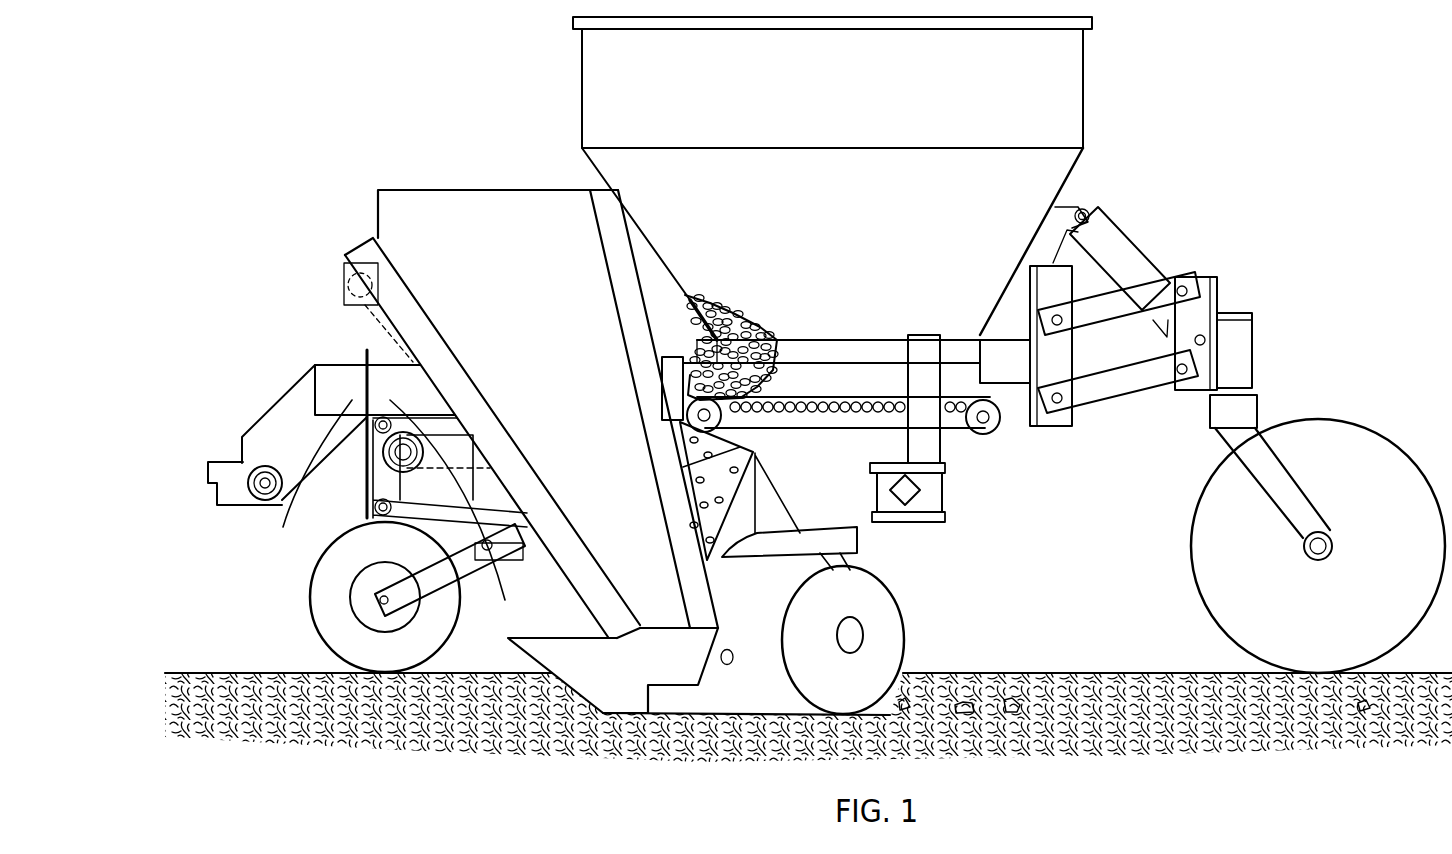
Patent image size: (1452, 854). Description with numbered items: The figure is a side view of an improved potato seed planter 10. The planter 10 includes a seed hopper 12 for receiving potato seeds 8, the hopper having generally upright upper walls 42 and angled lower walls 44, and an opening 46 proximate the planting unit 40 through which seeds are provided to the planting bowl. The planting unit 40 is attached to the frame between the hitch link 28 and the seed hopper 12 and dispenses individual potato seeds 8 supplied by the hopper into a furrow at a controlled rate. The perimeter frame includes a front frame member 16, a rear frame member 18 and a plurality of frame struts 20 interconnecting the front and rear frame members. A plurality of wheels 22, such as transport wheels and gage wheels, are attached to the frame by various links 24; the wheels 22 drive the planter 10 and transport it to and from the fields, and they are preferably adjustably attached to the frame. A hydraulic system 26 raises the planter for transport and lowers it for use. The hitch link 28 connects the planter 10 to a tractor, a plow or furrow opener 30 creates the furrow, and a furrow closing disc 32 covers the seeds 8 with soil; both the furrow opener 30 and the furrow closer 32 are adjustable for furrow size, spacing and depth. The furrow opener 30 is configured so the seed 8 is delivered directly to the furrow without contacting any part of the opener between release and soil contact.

The potato seed planter 10 is at (1292, 96).
The seed hopper 12 is at (1068, 87).
The upper walls 42 is at (600, 70).
The lower walls 44 is at (1032, 188).
The planting unit 40 is at (478, 200).
The frame struts 20 is at (385, 370).
The hitch link 28 is at (290, 420).
The front frame member 16 is at (295, 505).
The wheels 22 is at (318, 604).
The links 24 is at (467, 557).
The hydraulic system 26 is at (1130, 252).
The rear frame member 18 is at (1005, 370).
The potato seeds 8 is at (762, 375).
The opening 46 is at (723, 437).
The furrow opener 30 is at (565, 665).
The furrow closing disc 32 is at (886, 641).